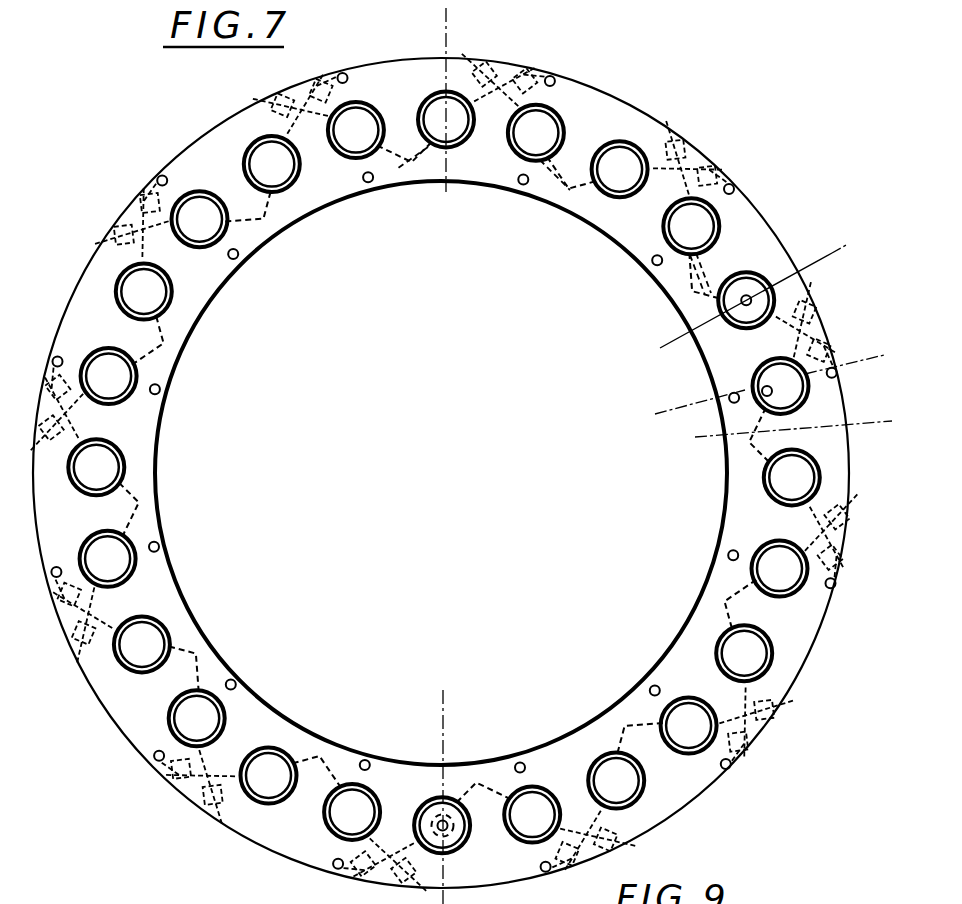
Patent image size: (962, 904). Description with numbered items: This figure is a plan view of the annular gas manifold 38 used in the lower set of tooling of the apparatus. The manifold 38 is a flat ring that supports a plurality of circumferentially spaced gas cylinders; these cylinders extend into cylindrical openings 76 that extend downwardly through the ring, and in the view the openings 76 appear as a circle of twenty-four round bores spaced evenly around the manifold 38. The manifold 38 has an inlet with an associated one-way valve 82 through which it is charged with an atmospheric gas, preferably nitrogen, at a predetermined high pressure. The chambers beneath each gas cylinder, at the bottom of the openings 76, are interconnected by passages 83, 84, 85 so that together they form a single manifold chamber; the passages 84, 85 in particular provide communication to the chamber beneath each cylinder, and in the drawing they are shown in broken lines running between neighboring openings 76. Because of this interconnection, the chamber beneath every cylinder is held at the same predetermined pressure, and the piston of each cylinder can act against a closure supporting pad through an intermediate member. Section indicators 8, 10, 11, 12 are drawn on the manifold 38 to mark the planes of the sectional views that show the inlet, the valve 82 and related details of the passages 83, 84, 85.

The section line 8- 8 is at (447, 28).
The section line 10- 10 is at (684, 416).
The section line 11- 11 is at (673, 350).
The section line 12- 12 is at (710, 440).
The annular gas manifold 38 is at (288, 704).
The cylindrical openings 76 is at (147, 636).
The one-way valve 82 is at (838, 361).
The passage 83 is at (712, 430).
The passage 84 is at (393, 165).
The passage 85 is at (430, 170).